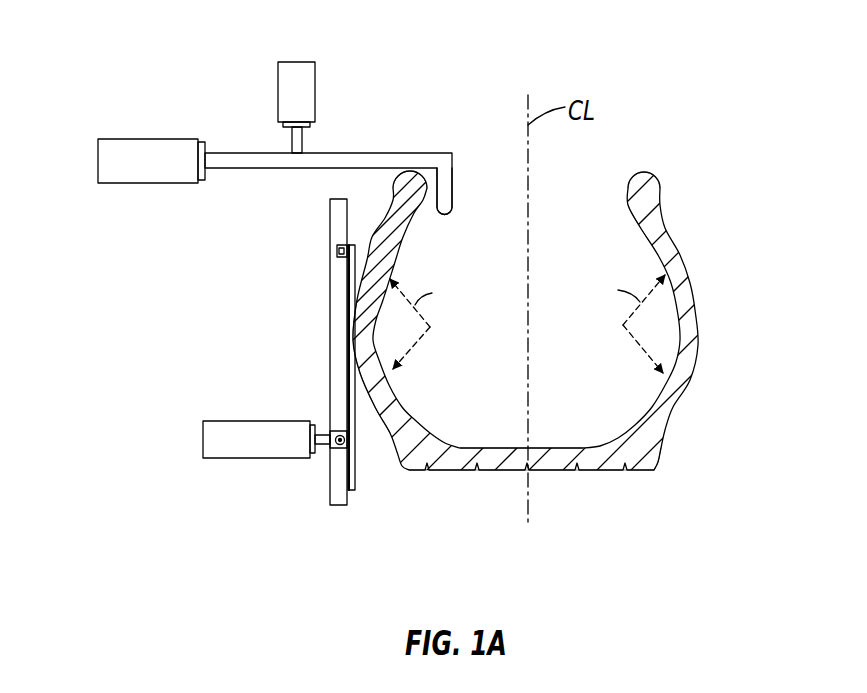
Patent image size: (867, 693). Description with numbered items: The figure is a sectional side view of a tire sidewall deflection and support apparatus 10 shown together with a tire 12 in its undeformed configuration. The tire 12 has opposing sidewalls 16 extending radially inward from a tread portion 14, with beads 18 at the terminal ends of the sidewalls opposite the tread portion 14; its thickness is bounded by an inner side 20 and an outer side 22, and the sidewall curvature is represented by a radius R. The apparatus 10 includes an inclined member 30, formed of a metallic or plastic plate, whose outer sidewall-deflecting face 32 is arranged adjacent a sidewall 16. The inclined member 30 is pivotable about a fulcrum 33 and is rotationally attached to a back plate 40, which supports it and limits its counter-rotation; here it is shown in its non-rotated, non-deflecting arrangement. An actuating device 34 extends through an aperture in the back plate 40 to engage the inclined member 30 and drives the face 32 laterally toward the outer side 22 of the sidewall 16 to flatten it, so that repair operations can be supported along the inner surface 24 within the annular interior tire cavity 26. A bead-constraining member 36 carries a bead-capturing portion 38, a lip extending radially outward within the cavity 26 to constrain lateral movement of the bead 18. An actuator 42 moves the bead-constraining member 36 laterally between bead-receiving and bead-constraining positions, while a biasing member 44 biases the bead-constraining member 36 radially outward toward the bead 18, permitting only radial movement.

The tire sidewall deflection and support apparatus 10 is at (153, 64).
The tire 12 is at (607, 497).
The tread portion 14 is at (503, 470).
The sidewall 16 is at (388, 262).
The bead 18 is at (413, 193).
The inner side 20 is at (640, 228).
The outer side 22 is at (658, 472).
The inner surface of the sidewall 24 is at (395, 393).
The annular interior tire cavity 26 is at (612, 411).
The inclined member 30 is at (350, 295).
The sidewall-deflecting face 32 is at (355, 477).
The fulcrum 33 is at (337, 250).
The actuating device 34 is at (203, 440).
The bead-constraining member 36 is at (337, 152).
The bead-capturing portion 38 is at (453, 172).
The back plate 40 is at (330, 345).
The actuator 42 is at (167, 185).
The biasing member 44 is at (277, 90).